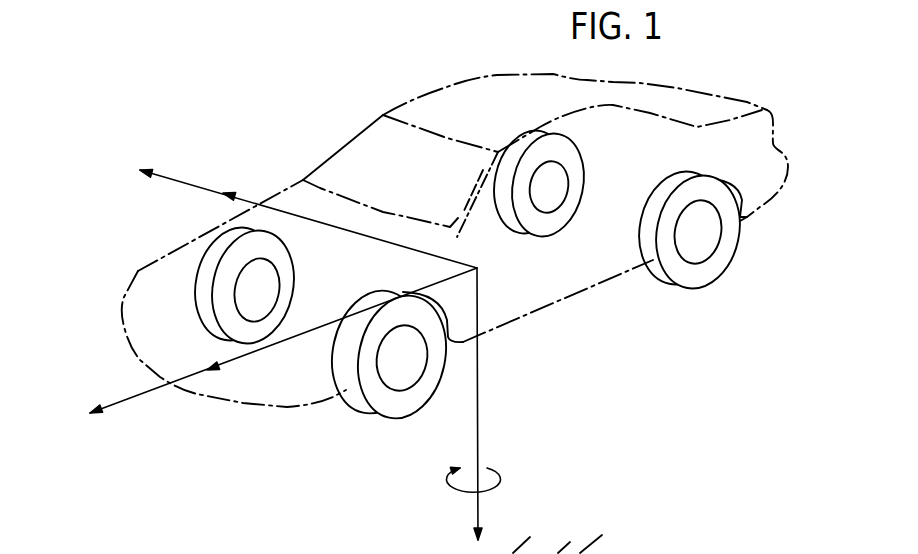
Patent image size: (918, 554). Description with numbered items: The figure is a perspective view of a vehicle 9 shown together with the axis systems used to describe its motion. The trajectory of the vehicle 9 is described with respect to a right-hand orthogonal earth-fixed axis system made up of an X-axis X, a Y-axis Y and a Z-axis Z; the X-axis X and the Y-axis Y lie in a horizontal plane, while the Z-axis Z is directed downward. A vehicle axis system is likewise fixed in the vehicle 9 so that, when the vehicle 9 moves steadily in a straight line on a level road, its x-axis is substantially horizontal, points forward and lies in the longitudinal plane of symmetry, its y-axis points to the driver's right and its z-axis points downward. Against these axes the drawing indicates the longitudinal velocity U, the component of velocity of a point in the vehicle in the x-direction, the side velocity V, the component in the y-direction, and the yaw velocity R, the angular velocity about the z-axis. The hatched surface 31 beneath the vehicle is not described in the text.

The vehicle 9 is at (449, 87).
The road surface 31 is at (571, 532).
The X-axis X is at (93, 408).
The Y-axis Y is at (143, 168).
The Z-axis Z is at (476, 532).
The longitudinal velocity U is at (210, 373).
The side velocity V is at (227, 191).
The yaw velocity R is at (503, 480).